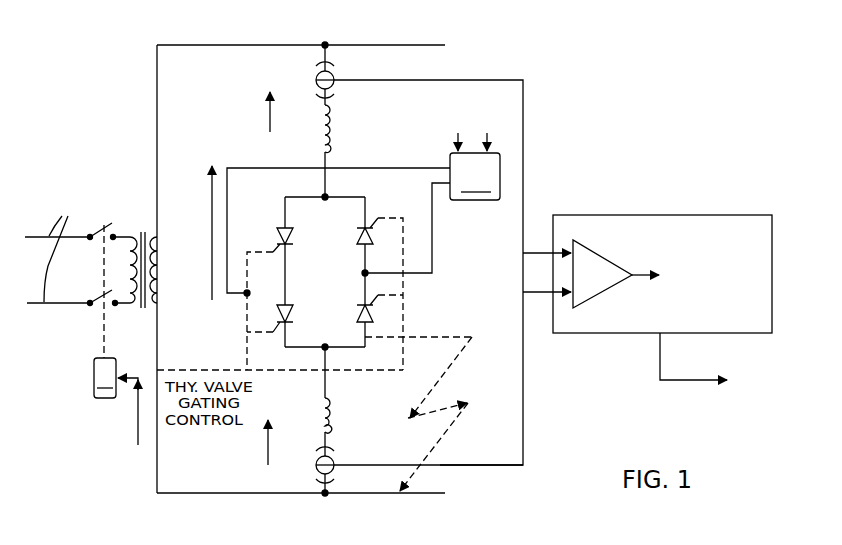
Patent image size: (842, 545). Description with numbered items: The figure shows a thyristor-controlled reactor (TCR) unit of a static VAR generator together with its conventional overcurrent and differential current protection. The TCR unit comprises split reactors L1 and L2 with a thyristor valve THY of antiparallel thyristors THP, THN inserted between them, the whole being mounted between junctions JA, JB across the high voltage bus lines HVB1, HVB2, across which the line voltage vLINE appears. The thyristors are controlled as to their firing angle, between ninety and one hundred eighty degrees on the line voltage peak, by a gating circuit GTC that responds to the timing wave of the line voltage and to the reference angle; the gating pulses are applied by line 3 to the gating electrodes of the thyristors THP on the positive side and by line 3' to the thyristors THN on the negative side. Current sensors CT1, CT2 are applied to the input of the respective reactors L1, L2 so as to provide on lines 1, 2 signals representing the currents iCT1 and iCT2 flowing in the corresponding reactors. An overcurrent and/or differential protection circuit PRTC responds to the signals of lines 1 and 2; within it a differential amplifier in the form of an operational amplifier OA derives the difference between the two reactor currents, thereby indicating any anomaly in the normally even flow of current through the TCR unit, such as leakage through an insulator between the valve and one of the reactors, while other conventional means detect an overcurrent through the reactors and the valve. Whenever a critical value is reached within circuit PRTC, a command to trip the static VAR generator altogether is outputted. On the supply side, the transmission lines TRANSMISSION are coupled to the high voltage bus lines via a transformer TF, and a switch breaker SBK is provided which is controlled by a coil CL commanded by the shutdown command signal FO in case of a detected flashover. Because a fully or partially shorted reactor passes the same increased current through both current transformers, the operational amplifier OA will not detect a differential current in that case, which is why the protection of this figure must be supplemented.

The line 1 is at (412, 82).
The line 2 is at (493, 464).
The gating line 3 is at (338, 220).
The gating line 3' is at (406, 229).
The high voltage bus line HVB1 is at (272, 45).
The high voltage bus line HVB2 is at (261, 500).
The junction JA is at (327, 45).
The junction JB is at (327, 494).
The current sensor CT1 is at (319, 80).
The current sensor CT2 is at (319, 462).
The split reactor L1 is at (319, 148).
The split reactor L2 is at (322, 400).
The current through current sensor CT1 iCT1 is at (288, 112).
The current through current sensor CT2 iCT2 is at (287, 442).
The line voltage vLINE is at (189, 233).
The thyristor valve THY is at (325, 272).
The thyristors on the positive side THP is at (264, 280).
The thyristors on the negative side THN is at (382, 263).
The gating circuit GTC is at (475, 157).
The overcurrent and/or differential protection circuit PRTC is at (702, 202).
The operational amplifier OA is at (598, 296).
The transmission lines TRANSMISSION is at (75, 240).
The switch breaker SBK is at (136, 219).
The transformer TF is at (136, 326).
The coil CL is at (105, 378).
The command signal FO is at (132, 423).